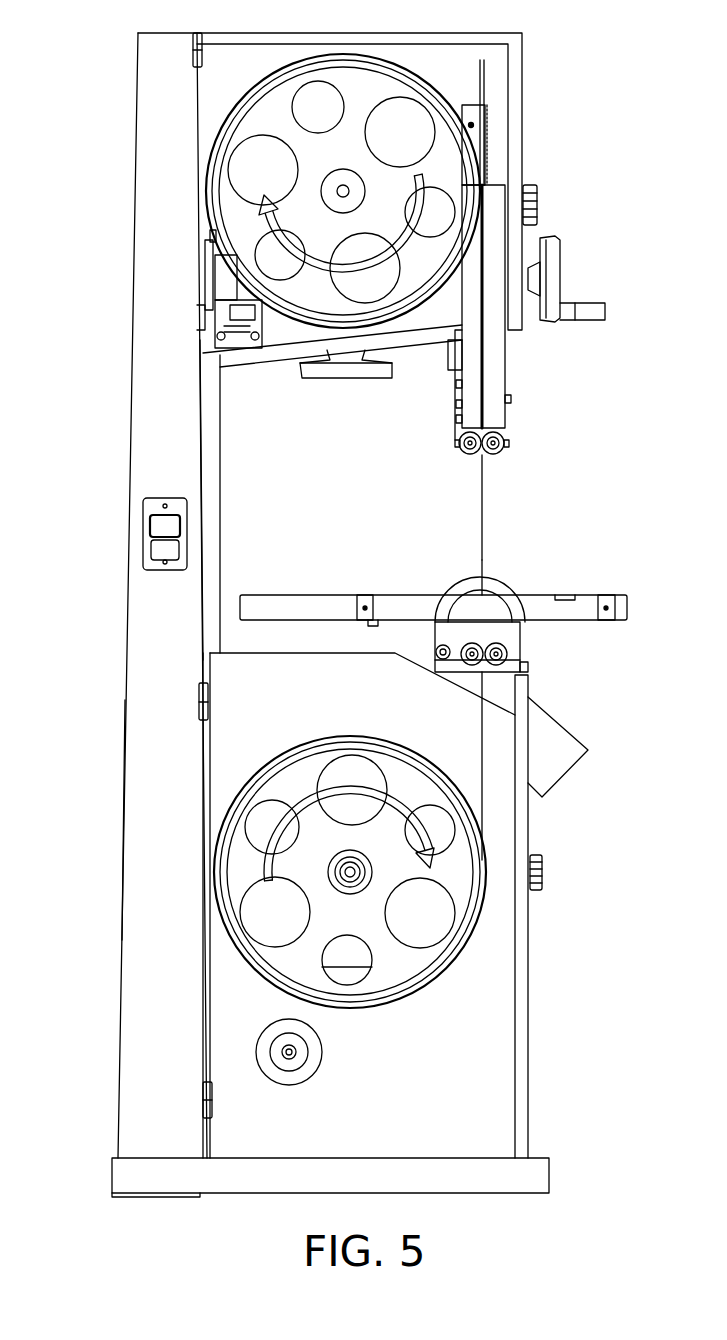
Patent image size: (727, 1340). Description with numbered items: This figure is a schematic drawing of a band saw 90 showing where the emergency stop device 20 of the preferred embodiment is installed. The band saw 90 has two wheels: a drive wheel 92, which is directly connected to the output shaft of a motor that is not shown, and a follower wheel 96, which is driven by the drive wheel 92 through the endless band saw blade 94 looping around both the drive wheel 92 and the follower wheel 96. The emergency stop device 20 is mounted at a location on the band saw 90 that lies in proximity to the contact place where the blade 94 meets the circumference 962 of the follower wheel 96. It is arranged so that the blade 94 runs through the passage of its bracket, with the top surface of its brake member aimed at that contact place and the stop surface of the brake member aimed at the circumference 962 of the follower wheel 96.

The band saw 90 is at (344, 601).
The follower wheel 96 is at (333, 251).
The circumference of the follower wheel 962 is at (317, 320).
The drive wheel 92 is at (457, 907).
The band saw blade 94 is at (212, 760).
The emergency stop device 20 is at (194, 270).